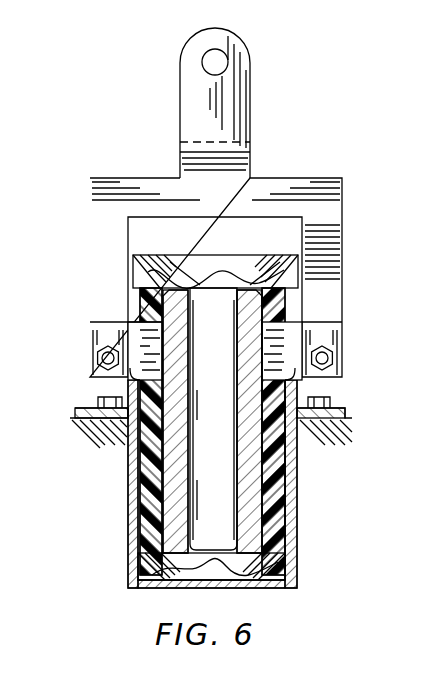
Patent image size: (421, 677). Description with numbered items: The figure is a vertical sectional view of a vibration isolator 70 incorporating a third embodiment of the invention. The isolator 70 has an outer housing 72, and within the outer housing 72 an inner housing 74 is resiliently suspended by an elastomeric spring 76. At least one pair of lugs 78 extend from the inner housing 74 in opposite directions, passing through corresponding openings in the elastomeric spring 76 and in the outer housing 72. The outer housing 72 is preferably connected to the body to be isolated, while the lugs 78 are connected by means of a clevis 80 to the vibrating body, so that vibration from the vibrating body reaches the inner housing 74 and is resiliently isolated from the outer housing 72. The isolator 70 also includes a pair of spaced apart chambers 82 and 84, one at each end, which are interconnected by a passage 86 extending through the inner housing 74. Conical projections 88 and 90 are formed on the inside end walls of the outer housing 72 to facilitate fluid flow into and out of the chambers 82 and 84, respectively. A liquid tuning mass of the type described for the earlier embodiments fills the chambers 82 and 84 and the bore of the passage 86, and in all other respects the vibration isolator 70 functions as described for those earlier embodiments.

The vibration isolator 70 is at (292, 172).
The outer housing 72 is at (133, 513).
The inner housing 74 is at (260, 522).
The elastomeric spring 76 is at (290, 503).
The lugs 78 is at (150, 356).
The clevis 80 is at (148, 188).
The chamber 82 is at (178, 274).
The chamber 84 is at (250, 568).
The passage 86 is at (270, 353).
The conical projection 88 is at (225, 278).
The conical projection 90 is at (200, 570).